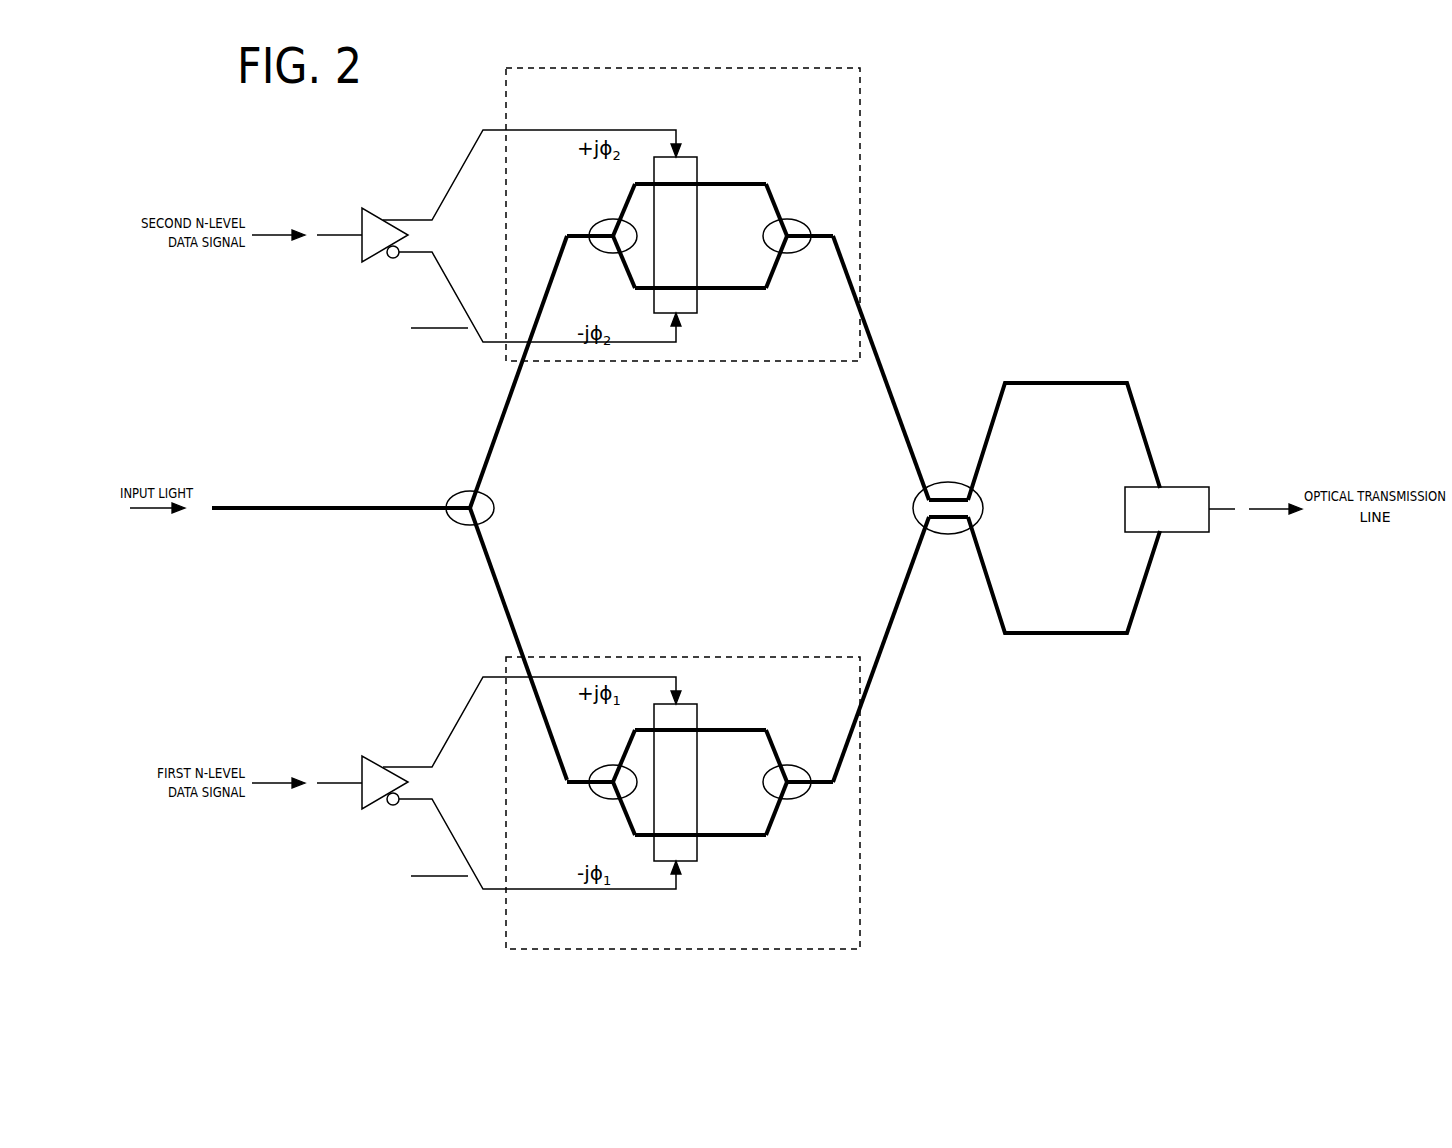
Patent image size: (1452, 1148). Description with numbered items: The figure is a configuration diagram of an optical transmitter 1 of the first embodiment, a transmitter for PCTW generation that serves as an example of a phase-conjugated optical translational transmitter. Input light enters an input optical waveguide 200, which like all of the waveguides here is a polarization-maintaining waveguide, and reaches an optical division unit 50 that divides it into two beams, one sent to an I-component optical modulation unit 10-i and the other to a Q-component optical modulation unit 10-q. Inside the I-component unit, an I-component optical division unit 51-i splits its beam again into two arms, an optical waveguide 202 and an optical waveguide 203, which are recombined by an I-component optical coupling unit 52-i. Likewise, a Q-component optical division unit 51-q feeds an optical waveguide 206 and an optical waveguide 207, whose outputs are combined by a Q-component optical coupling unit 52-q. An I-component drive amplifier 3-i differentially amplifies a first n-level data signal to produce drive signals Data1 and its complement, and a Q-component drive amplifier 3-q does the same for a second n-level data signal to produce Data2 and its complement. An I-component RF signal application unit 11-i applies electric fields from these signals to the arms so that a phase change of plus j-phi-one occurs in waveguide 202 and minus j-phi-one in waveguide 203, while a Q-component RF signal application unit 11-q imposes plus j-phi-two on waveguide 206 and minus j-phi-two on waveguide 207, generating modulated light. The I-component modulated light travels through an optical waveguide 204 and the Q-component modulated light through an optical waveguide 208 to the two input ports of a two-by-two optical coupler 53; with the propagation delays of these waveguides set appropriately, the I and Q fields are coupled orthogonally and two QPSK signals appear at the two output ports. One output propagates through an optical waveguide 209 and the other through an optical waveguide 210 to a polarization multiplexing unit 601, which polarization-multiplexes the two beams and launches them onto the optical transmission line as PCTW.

The optical transmitter 1 is at (1233, 172).
The Q-component drive amplifier 3-q is at (375, 208).
The I-component drive amplifier 3-i is at (375, 756).
The Q-component optical modulation unit 10-q is at (861, 82).
The I-component optical modulation unit 10-i is at (861, 930).
The Q-component RF signal application unit 11-q is at (687, 314).
The I-component RF signal application unit 11-i is at (687, 704).
The optical division unit 50 is at (494, 508).
The Q-component optical division unit 51-q is at (598, 222).
The I-component optical division unit 51-i is at (598, 797).
The Q-component optical coupling unit 52-q is at (795, 220).
The I-component optical coupling unit 52-i is at (802, 797).
The 2×2 optical coupler 53 is at (913, 508).
The input optical waveguide 200 is at (253, 506).
The optical waveguide 202 is at (740, 730).
The optical waveguide 203 is at (740, 836).
The optical waveguide 204 is at (900, 598).
The optical waveguide 206 is at (740, 184).
The optical waveguide 207 is at (740, 289).
The optical waveguide 208 is at (899, 418).
The optical waveguide 209 is at (1067, 634).
The optical waveguide 210 is at (1063, 383).
The polarization multiplexing unit 601 is at (1186, 487).